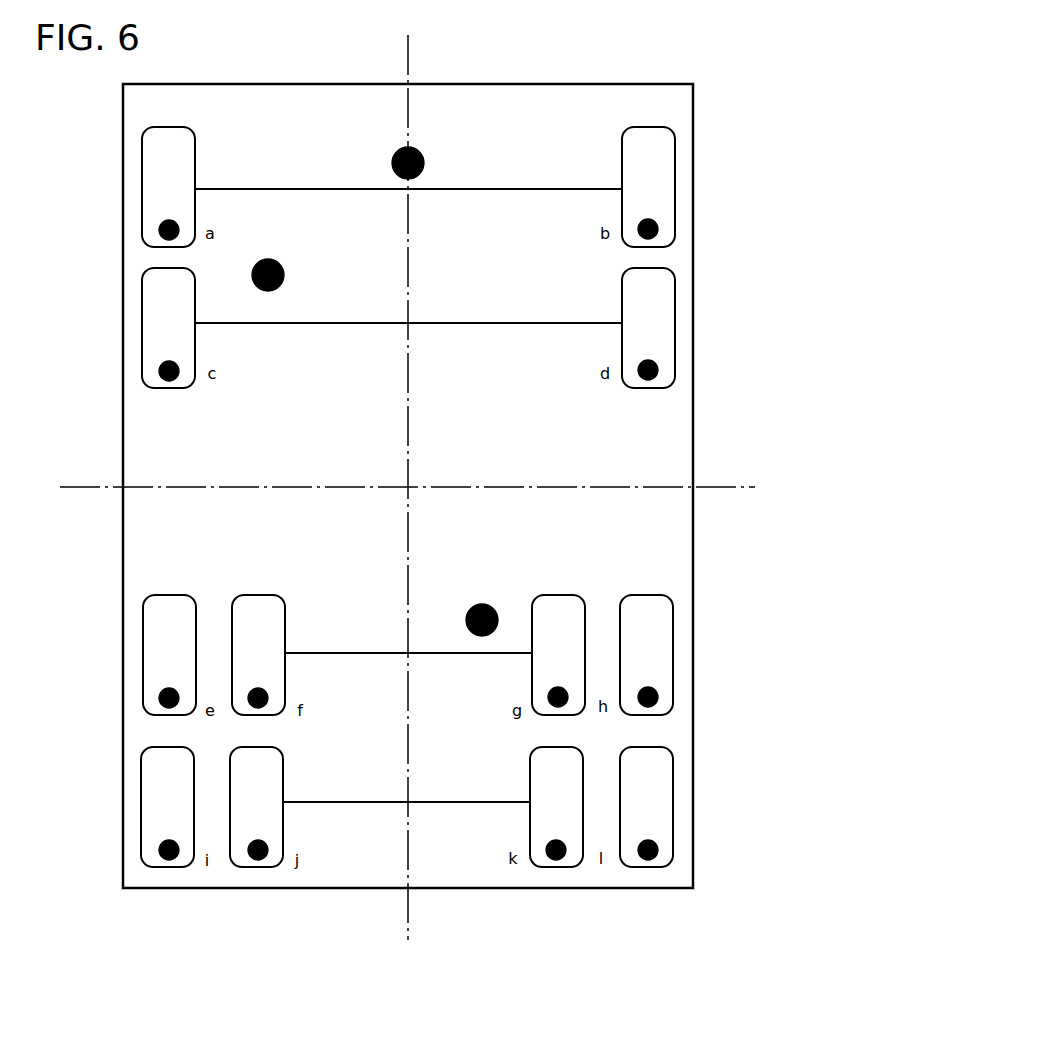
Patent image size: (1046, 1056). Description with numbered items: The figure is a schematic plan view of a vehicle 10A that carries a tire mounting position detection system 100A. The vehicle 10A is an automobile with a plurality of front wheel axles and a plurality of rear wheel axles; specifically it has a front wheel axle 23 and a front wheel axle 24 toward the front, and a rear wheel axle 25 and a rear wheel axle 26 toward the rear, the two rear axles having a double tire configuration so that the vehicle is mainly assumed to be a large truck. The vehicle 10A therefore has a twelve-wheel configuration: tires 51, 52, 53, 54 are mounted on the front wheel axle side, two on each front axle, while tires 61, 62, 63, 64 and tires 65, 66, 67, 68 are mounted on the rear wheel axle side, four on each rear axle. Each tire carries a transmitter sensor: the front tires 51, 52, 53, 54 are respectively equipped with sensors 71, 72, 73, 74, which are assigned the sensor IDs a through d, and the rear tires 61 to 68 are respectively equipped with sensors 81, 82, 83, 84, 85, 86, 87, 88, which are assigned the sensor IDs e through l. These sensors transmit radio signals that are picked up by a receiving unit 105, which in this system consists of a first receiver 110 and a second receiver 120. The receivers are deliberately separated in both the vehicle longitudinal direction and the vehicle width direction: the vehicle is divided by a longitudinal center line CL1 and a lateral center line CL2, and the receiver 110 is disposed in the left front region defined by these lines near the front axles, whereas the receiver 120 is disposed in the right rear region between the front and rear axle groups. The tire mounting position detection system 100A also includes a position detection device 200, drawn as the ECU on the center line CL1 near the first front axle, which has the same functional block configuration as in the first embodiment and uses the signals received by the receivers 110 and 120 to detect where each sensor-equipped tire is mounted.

The vehicle 10A is at (693, 128).
The tire mounting position detection system 100A is at (467, 135).
The position detection device 200 is at (425, 163).
The center line CL1 is at (410, 52).
The center line CL2 is at (722, 487).
The front wheel axle 23 is at (512, 189).
The front wheel axle 24 is at (458, 323).
The rear wheel axle 25 is at (318, 653).
The rear wheel axle 26 is at (318, 802).
The tire 51 is at (142, 196).
The tire 52 is at (675, 190).
The tire 53 is at (142, 325).
The tire 54 is at (675, 322).
The tire 61 is at (170, 595).
The tire 62 is at (259, 595).
The tire 63 is at (559, 595).
The tire 64 is at (649, 595).
The tire 65 is at (168, 867).
The tire 66 is at (257, 867).
The tire 67 is at (557, 867).
The tire 68 is at (647, 867).
The sensor 71 is at (160, 231).
The sensor 72 is at (657, 229).
The sensor 73 is at (160, 371).
The sensor 74 is at (657, 370).
The sensor 81 is at (160, 698).
The sensor 82 is at (268, 696).
The sensor 83 is at (548, 696).
The sensor 84 is at (658, 697).
The sensor 85 is at (160, 851).
The sensor 86 is at (268, 848).
The sensor 87 is at (546, 850).
The sensor 88 is at (658, 850).
The receiving unit 105 is at (330, 382).
The receiver 110 is at (278, 288).
The receiver 120 is at (472, 604).